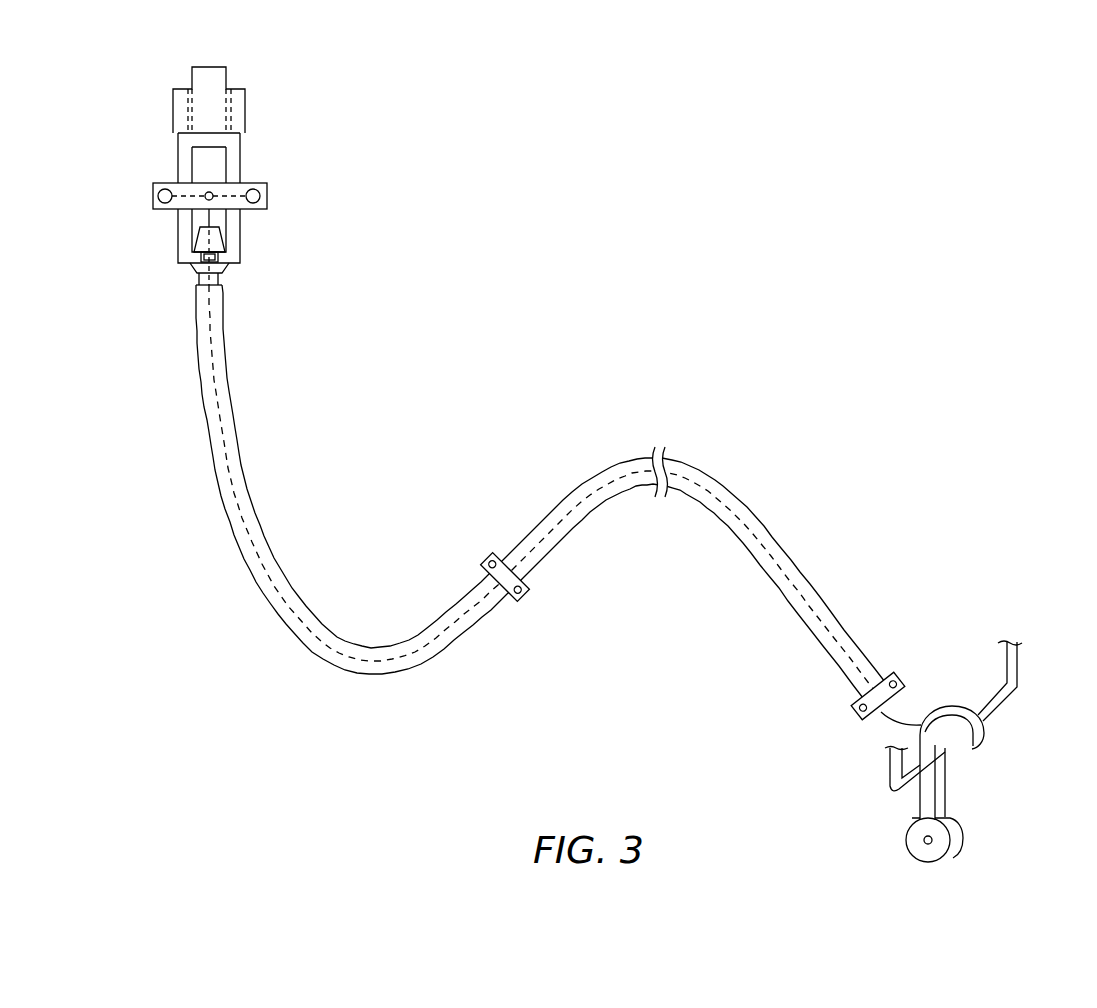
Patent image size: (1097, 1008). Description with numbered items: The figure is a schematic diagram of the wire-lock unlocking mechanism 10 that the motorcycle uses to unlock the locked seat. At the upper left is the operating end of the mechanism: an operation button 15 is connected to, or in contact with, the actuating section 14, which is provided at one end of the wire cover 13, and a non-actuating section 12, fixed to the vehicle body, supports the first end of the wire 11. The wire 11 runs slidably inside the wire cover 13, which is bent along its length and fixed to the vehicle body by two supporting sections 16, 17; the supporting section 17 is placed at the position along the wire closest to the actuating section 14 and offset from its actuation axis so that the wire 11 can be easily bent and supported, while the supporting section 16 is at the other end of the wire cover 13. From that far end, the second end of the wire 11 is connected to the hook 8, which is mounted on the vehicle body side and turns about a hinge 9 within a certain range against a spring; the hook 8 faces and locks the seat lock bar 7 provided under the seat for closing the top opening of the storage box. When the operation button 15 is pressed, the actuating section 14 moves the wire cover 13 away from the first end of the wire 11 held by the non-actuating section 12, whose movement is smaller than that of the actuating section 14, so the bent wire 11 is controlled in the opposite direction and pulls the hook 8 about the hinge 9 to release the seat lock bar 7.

The seat lock bar 7 is at (1018, 665).
The hook 8 is at (962, 710).
The hinge 9 is at (924, 841).
The wire-lock unlocking mechanism 10 is at (606, 466).
The wire 11 is at (913, 722).
The non-actuating section 12 is at (267, 188).
The wire cover 13 is at (610, 470).
The actuating section 14 is at (240, 240).
The operation button 15 is at (218, 77).
The supporting section 16 is at (852, 700).
The supporting section 17 is at (490, 560).